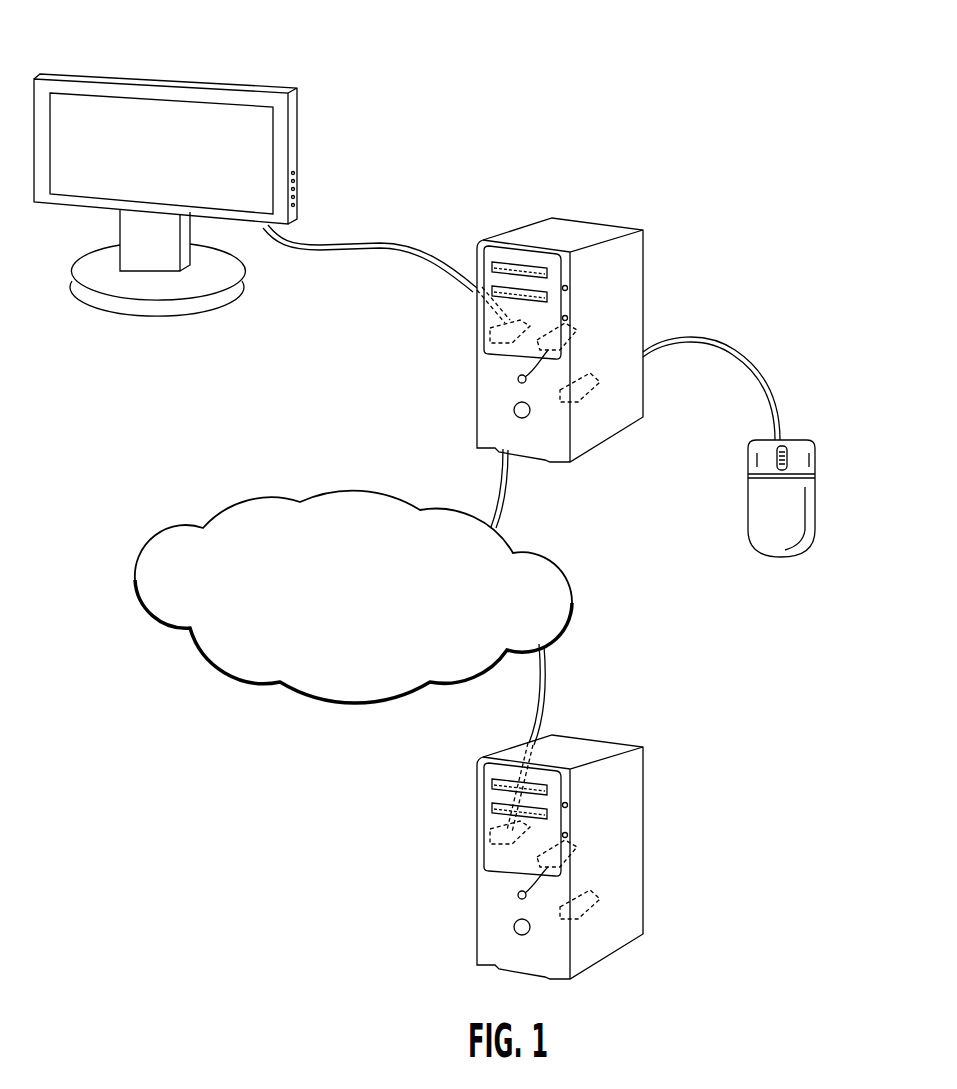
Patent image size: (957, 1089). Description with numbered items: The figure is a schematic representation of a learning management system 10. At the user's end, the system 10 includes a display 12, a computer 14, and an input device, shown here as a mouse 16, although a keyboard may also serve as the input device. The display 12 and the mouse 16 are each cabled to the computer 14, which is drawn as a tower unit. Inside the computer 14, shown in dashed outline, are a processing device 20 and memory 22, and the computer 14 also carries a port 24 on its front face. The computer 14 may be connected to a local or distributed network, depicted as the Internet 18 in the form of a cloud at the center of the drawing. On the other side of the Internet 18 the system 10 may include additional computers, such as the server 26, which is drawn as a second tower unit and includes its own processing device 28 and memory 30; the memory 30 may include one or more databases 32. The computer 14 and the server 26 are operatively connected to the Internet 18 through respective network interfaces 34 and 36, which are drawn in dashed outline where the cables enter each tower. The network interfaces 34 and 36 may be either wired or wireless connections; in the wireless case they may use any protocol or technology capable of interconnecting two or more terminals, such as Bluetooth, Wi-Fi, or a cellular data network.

The learning management system 10 is at (647, 117).
The display 12 is at (200, 88).
The computer 14 is at (630, 280).
The mouse 16 is at (788, 530).
The Internet 18 is at (233, 527).
The processing device 20 is at (577, 377).
The memory 22 is at (567, 323).
The input/output port 24 is at (518, 380).
The server 26 is at (582, 857).
The processing device 28 is at (596, 882).
The memory 30 is at (577, 837).
The database 32 is at (516, 888).
The network interface 34 is at (493, 328).
The network interface 36 is at (481, 843).